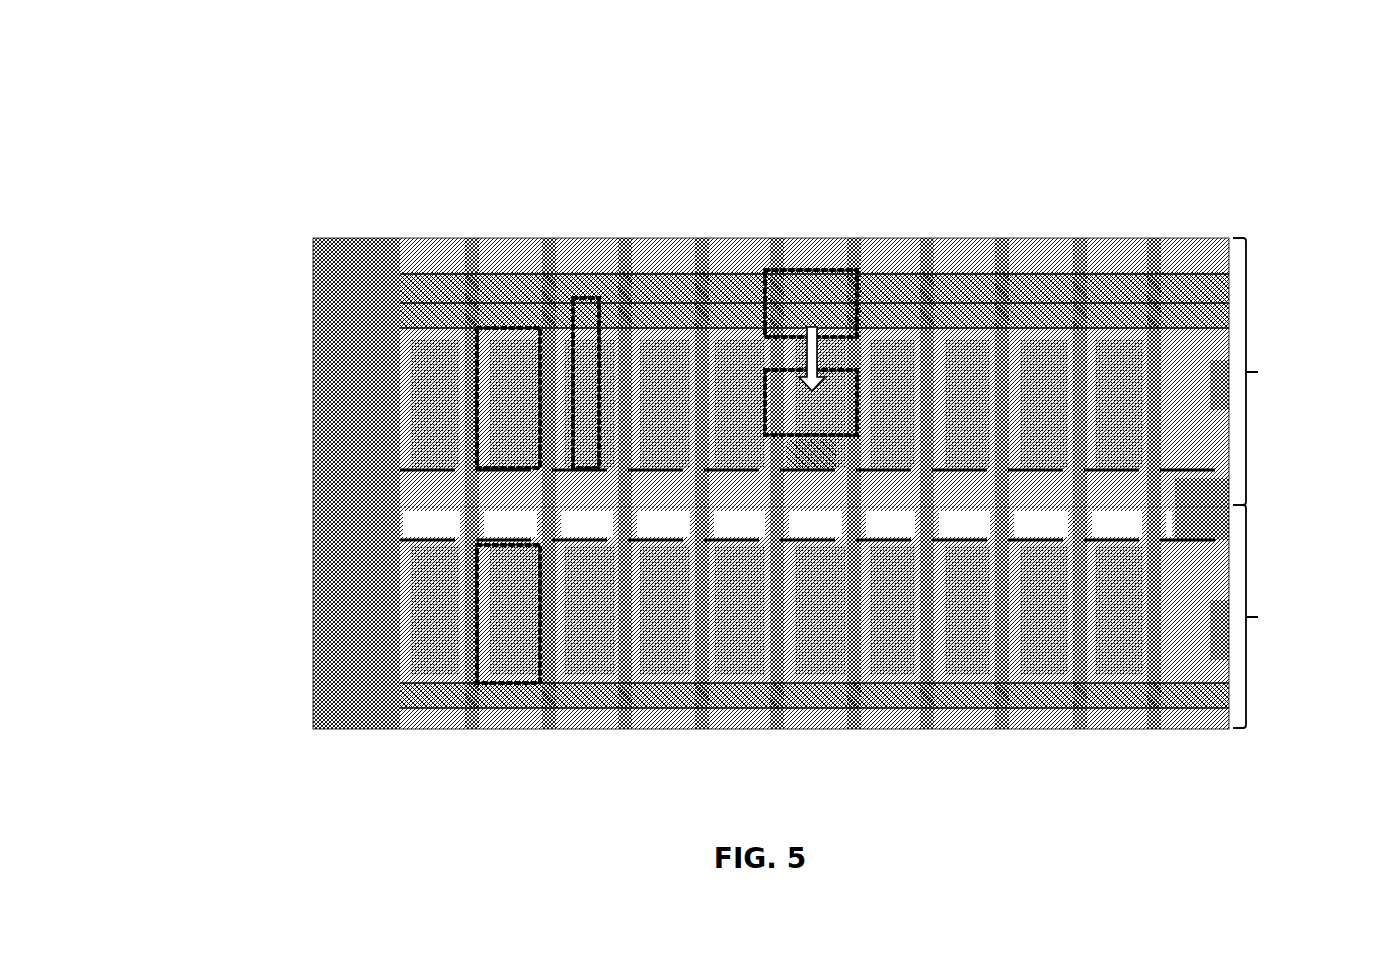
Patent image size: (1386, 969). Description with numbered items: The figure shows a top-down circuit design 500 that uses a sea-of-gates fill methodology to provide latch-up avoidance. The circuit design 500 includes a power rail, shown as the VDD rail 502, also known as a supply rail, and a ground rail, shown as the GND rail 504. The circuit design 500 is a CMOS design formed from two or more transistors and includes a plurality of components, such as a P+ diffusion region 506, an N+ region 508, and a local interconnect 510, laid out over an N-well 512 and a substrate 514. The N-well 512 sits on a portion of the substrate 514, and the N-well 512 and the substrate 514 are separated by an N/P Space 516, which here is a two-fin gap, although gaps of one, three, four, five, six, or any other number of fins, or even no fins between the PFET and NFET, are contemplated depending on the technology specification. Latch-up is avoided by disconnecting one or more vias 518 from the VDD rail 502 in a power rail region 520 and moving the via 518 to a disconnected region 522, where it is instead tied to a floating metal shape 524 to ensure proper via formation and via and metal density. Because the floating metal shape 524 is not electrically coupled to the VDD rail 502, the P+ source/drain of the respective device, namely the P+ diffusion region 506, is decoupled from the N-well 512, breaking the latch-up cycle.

The circuit design 500 is at (250, 66).
The VDD rail 502 is at (333, 291).
The GND rail 504 is at (340, 695).
The P+ diffusion region 506 is at (490, 353).
The N+ region 508 is at (490, 657).
The local interconnect 510 is at (588, 347).
The N-well 512 is at (1282, 371).
The substrate 514 is at (1300, 616).
The N/P Space 516 is at (305, 472).
The via 518 is at (805, 288).
The power rail region 520 is at (828, 272).
The disconnected region 522 is at (855, 395).
The floating metal shape 524 is at (813, 423).